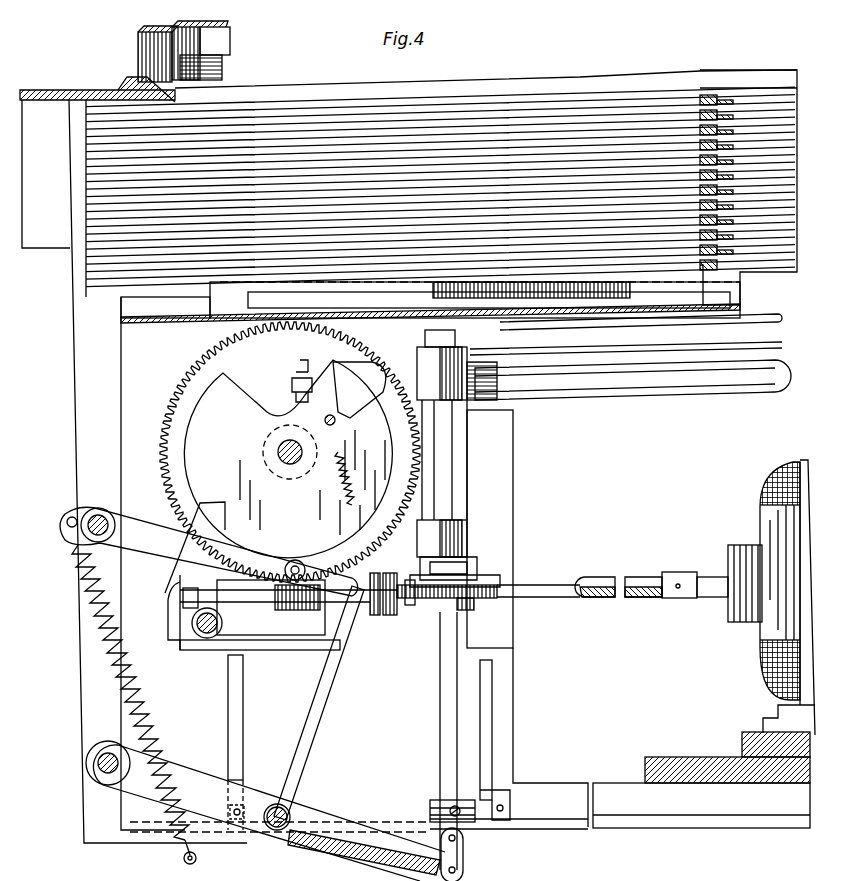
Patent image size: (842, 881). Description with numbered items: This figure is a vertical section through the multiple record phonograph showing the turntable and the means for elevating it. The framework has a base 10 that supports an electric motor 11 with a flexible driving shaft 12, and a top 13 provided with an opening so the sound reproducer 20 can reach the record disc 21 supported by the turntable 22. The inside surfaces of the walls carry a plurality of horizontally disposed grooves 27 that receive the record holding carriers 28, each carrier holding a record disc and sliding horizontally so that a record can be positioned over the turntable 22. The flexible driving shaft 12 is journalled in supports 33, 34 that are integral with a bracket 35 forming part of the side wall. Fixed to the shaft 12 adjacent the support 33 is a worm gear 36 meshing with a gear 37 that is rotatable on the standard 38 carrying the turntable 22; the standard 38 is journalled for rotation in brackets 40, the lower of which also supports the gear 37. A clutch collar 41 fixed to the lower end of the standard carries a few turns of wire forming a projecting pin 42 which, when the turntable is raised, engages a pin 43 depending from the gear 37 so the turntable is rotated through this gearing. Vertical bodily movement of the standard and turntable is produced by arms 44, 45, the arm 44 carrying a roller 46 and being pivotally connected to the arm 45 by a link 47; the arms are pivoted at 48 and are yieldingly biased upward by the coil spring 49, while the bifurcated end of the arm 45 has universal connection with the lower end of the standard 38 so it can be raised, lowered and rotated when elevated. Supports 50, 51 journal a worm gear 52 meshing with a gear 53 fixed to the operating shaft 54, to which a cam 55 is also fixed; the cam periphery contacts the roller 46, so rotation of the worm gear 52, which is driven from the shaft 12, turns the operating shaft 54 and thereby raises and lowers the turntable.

The base 10 is at (610, 790).
The electric motor 11 is at (772, 508).
The flexible driving shaft 12 is at (640, 597).
The top 13 is at (78, 89).
The sound reproducer 20 is at (215, 47).
The record disc 21 is at (752, 92).
The turntable 22 is at (632, 291).
The grooves 27 is at (523, 125).
The record holding carriers 28 is at (708, 130).
The support 33 is at (497, 598).
The support 34 is at (410, 606).
The bracket 35 is at (300, 650).
The worm gear 36 is at (474, 608).
The gear 37 is at (483, 583).
The standard 38 is at (445, 452).
The brackets 40 is at (455, 372).
The clutch collar 41 is at (433, 805).
The projecting pin 42 is at (500, 800).
The pin 43 is at (390, 616).
The arm 44 is at (235, 556).
The arm 45 is at (292, 812).
The roller 46 is at (297, 560).
The link 47 is at (318, 720).
The pivot 48 is at (98, 508).
The coil spring 49 is at (150, 692).
The support 50 is at (340, 620).
The support 51 is at (224, 625).
The worm gear 52 is at (300, 635).
The gear 53 is at (205, 360).
The operating shaft 54 is at (278, 451).
The cam 55 is at (200, 460).